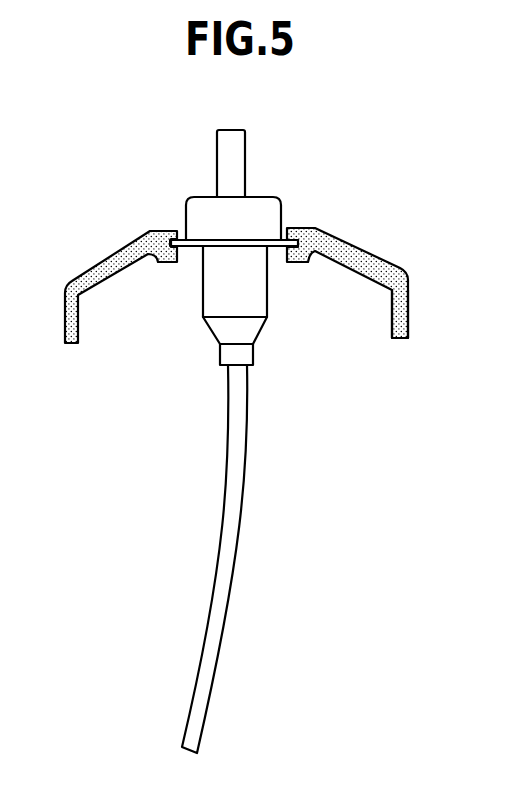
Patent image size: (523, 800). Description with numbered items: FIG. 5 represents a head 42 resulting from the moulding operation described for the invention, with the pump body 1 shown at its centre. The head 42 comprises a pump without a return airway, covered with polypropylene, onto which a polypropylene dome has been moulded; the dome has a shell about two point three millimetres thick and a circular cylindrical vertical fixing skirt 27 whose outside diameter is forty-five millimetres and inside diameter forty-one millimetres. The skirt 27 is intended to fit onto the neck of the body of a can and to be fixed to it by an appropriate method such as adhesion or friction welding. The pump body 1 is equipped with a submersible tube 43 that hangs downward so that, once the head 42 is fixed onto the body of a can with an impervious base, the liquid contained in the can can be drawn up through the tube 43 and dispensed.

The connector body 1 is at (213, 287).
The head 42 is at (160, 204).
The circular cylindrical vertical fixing skirt 27 is at (403, 315).
The submersible tube 43 is at (238, 468).